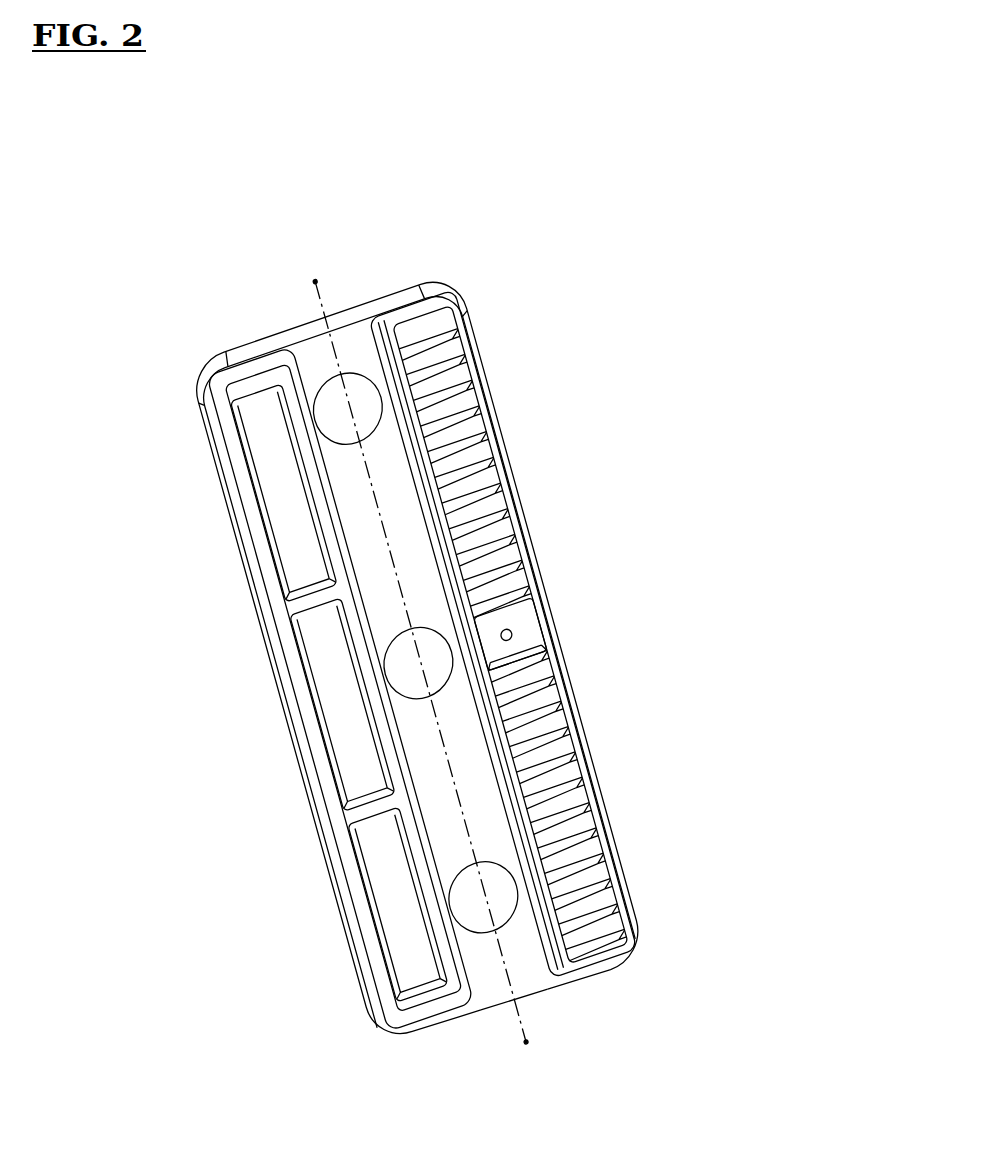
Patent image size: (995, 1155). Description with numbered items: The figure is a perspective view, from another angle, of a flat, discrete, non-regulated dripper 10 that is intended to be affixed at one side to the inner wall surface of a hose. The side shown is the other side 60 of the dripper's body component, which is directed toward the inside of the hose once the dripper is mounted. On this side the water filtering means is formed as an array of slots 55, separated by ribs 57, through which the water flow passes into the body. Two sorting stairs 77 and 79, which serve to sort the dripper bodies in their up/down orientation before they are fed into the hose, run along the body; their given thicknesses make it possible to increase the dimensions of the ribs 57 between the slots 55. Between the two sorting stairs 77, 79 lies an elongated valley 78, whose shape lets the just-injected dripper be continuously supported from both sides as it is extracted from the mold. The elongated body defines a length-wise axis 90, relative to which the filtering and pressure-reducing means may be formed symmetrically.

The dripper 10 is at (590, 635).
The slots 55 is at (495, 512).
The ribs 57 is at (492, 535).
The other side of the dripper's body component 60 is at (490, 780).
The sorting stair 77 is at (595, 903).
The valley 78 is at (513, 955).
The sorting stair 79 is at (388, 880).
The length-wise axis 90 is at (313, 300).